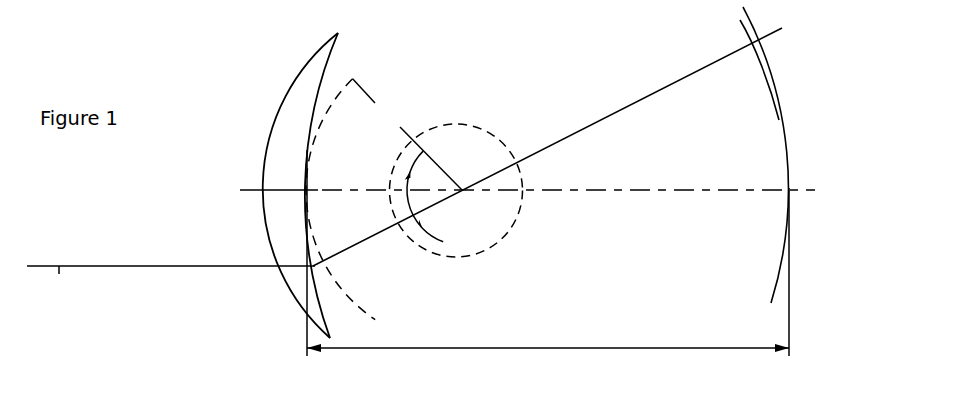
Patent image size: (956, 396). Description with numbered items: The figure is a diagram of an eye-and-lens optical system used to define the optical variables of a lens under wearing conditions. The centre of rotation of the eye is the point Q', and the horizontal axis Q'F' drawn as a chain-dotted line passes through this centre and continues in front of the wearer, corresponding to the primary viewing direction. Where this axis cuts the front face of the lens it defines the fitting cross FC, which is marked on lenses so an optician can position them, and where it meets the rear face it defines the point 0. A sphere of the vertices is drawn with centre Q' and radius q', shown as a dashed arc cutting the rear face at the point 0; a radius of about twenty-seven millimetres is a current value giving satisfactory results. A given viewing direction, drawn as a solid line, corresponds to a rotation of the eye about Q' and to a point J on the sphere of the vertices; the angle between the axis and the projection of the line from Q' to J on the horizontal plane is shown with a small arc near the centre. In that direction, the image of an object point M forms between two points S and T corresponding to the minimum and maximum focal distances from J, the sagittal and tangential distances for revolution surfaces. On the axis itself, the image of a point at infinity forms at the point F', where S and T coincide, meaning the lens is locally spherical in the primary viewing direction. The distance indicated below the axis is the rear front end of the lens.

The fitting cross FC is at (511, 193).
The point O 0 is at (300, 194).
The radius of the sphere of the vertices q' is at (384, 199).
The centre of rotation of the eye Q' is at (456, 190).
The point J on the sphere of the vertices J is at (547, 155).
The point M in the object space M is at (171, 287).
The point T is at (748, 68).
The point S is at (766, 151).
The point F' is at (776, 261).